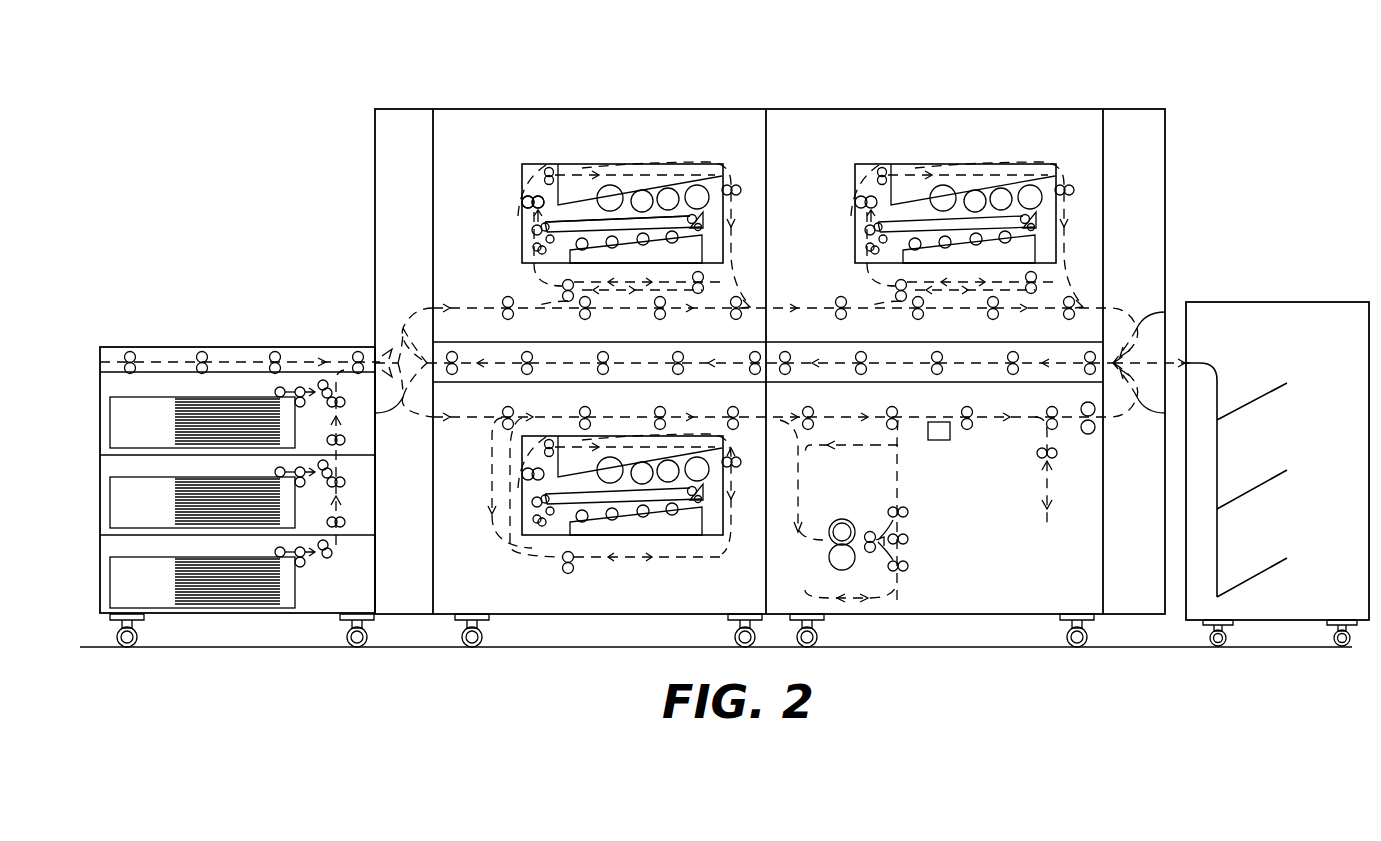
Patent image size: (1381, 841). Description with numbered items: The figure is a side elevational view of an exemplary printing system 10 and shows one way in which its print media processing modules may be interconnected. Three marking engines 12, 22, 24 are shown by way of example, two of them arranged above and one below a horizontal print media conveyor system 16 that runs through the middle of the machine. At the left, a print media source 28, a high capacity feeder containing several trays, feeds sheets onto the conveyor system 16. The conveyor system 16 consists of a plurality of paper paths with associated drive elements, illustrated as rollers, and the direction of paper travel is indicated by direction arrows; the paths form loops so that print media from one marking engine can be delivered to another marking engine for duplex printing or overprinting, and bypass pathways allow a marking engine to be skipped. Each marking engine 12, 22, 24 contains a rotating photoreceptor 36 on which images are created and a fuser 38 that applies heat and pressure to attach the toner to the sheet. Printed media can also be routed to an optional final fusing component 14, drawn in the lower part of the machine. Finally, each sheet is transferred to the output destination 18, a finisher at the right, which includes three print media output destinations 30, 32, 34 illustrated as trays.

The printing system 10 is at (406, 63).
The marking engine 12 is at (524, 168).
The final fusing component 14 is at (838, 520).
The print media conveyor system 16 is at (403, 328).
The output destination 18 is at (1310, 302).
The marking engine 22 is at (858, 168).
The marking engine 24 is at (527, 556).
The print media source 28 is at (110, 385).
The print media output destination 30 is at (1260, 372).
The print media output destination 32 is at (1260, 466).
The print media output destination 34 is at (1260, 559).
The photoreceptor 36 is at (570, 222).
The fuser 38 is at (524, 207).